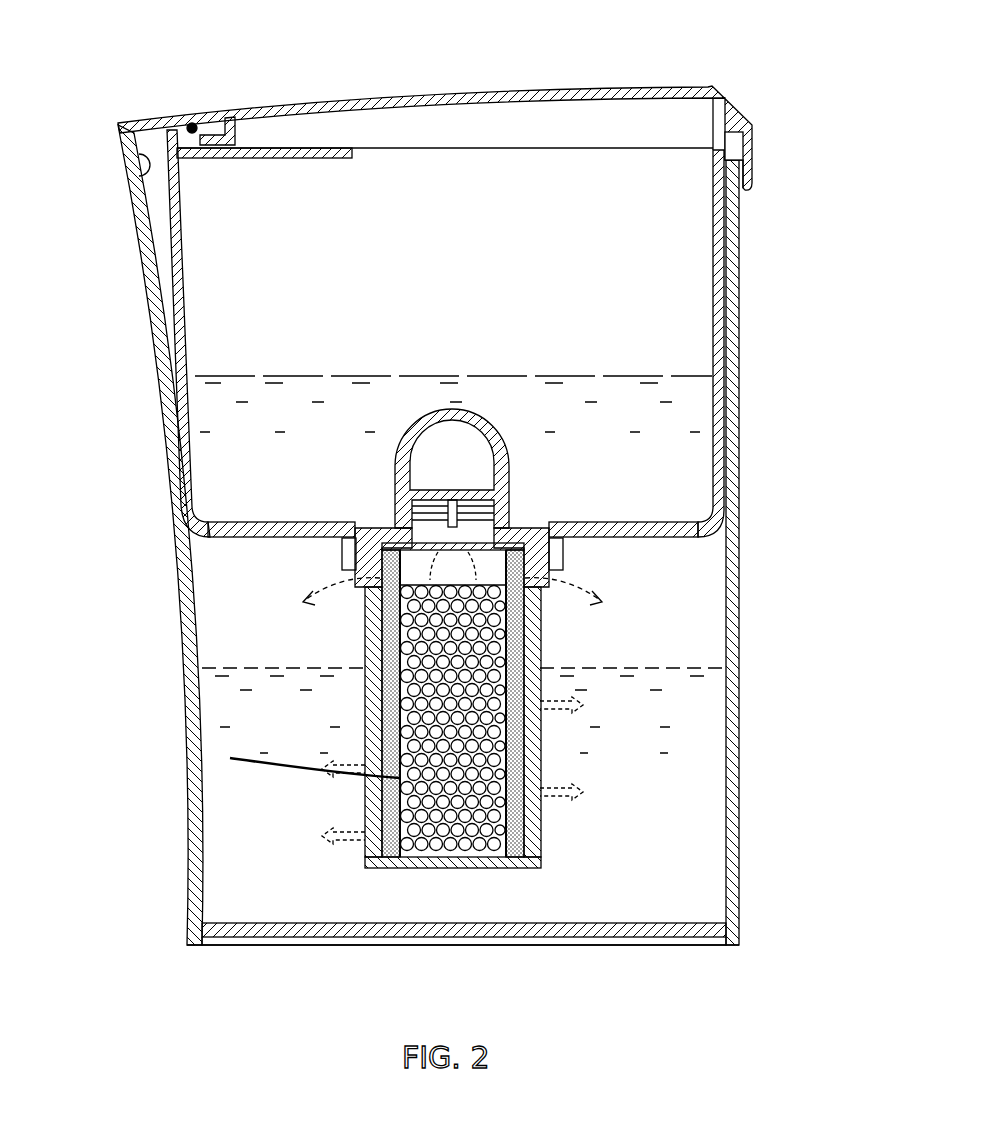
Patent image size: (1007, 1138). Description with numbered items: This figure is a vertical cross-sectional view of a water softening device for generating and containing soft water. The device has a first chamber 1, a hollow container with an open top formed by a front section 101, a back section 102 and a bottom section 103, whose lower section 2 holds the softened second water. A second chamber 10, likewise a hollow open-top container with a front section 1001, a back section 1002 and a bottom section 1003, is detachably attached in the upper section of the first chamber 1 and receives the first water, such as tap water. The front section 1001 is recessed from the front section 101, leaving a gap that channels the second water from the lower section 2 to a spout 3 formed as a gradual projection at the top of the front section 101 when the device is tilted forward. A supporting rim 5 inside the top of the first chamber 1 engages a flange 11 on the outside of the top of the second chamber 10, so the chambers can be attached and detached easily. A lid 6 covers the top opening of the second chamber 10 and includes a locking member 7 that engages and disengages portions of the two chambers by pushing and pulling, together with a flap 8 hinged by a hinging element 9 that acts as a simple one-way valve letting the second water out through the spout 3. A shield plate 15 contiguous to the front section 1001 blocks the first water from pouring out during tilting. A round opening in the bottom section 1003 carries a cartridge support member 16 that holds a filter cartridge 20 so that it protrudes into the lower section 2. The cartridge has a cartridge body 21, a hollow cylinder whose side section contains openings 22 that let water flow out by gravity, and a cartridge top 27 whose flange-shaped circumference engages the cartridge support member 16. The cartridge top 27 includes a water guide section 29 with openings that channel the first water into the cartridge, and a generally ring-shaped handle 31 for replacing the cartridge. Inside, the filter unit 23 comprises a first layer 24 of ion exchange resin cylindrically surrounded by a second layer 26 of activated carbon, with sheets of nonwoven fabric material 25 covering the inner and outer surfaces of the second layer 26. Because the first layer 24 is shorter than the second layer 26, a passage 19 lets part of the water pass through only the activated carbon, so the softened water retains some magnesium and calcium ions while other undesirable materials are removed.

The first chamber 1 is at (446, 559).
The lower section 2 is at (237, 893).
The spout 3 is at (145, 153).
The supporting rim 5 is at (727, 168).
The lid 6 is at (469, 95).
The locking member 7 is at (704, 128).
The flap 8 is at (152, 118).
The hinging element 9 is at (193, 118).
The second chamber 10 is at (444, 346).
The flange 11 is at (727, 133).
The shield plate 15 is at (237, 160).
The cartridge support member 16 is at (357, 537).
The passage 19 is at (309, 705).
The filter cartridge 20 is at (560, 628).
The cartridge body 21 is at (377, 800).
The openings 22 is at (380, 812).
The filter unit 23 is at (300, 703).
The first layer 24 is at (388, 720).
The nonwoven fabric material 25 is at (390, 785).
The second layer 26 is at (390, 745).
The cartridge top 27 is at (372, 540).
The water guide section 29 is at (417, 512).
The handle 31 is at (418, 432).
The front section 101 is at (176, 520).
The back section 102 is at (730, 525).
The bottom section 103 is at (582, 940).
The front section 1001 is at (176, 298).
The back section 1002 is at (723, 265).
The bottom section 1003 is at (632, 523).